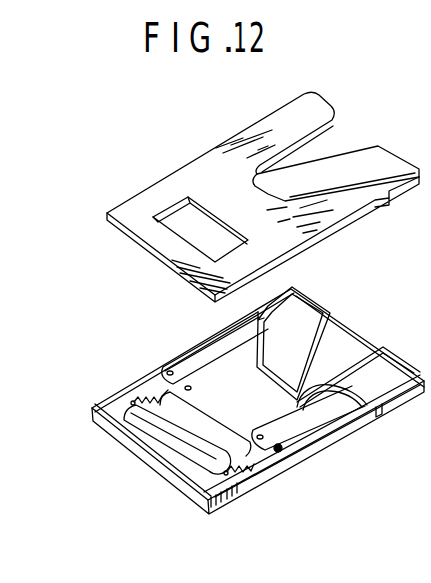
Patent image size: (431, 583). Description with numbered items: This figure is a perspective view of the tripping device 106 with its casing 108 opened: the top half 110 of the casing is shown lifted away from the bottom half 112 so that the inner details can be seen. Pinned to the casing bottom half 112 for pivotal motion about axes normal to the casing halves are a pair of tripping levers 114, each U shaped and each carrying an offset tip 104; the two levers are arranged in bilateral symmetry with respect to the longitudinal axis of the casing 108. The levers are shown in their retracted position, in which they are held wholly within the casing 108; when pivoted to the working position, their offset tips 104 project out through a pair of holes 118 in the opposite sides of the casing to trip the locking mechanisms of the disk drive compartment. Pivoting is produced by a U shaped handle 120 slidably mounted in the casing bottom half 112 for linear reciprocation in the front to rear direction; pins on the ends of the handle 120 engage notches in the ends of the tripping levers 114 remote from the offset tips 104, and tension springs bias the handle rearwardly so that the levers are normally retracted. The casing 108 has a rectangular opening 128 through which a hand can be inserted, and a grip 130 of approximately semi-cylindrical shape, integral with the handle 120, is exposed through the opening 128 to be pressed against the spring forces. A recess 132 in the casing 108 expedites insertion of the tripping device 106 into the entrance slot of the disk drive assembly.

The offset tip 104 is at (268, 326).
The tripping device 106 is at (113, 184).
The casing 108 is at (143, 374).
The top half 110 is at (338, 234).
The bottom half 112 is at (336, 442).
The tripping lever 114 is at (278, 427).
The hole 118 is at (237, 311).
The handle 120 is at (213, 468).
The rectangular opening 128 is at (172, 222).
The grip 130 is at (157, 417).
The recess 132 is at (304, 153).